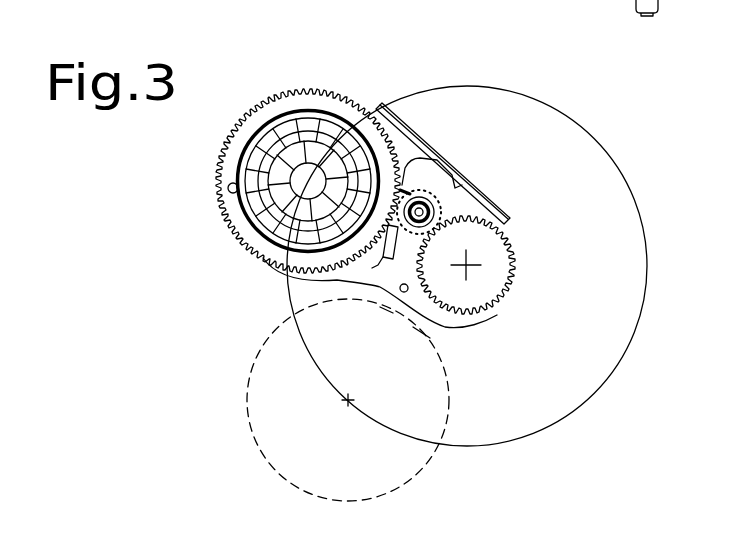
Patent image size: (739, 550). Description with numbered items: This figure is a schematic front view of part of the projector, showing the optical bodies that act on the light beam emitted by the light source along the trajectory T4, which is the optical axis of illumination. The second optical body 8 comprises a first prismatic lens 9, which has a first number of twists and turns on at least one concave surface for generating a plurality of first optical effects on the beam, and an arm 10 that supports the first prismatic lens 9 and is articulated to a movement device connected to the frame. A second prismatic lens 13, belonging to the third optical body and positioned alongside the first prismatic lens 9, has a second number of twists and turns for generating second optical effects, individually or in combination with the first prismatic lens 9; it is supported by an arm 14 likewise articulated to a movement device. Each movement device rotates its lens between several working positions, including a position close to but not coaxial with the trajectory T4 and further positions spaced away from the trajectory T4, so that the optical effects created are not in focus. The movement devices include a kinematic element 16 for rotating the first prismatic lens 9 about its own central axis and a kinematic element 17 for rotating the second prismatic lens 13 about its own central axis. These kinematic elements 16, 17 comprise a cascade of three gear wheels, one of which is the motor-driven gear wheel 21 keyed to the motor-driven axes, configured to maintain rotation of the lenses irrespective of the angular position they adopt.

The second optical body 8 is at (483, 164).
The first prismatic lens 9 is at (245, 183).
The second prismatic lens 13 is at (281, 179).
The arm 10 is at (443, 118).
The arm 14 is at (437, 157).
The kinematic element 16 is at (417, 337).
The kinematic element 17 is at (408, 254).
The motor-driven gear wheel 21 is at (514, 252).
The trajectory T4 is at (246, 407).